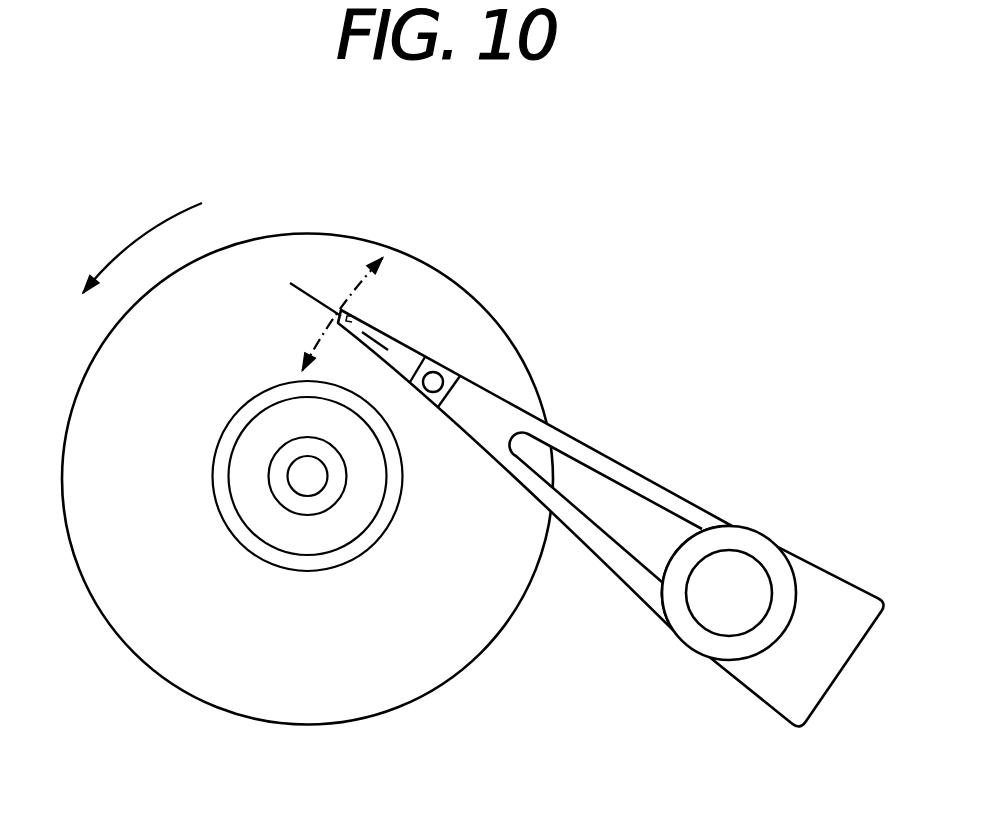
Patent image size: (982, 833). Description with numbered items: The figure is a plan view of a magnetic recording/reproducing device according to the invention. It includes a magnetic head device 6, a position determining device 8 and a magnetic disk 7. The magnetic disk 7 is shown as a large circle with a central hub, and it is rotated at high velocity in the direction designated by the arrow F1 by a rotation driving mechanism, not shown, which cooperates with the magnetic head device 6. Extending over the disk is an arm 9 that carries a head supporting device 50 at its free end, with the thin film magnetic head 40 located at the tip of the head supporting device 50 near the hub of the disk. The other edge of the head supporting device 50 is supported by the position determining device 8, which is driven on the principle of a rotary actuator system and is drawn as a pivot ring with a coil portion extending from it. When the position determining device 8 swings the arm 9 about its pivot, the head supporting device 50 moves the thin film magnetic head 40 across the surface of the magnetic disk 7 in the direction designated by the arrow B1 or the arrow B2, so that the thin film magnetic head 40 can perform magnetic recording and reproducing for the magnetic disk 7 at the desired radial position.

The magnetic head device 6 is at (572, 415).
The magnetic disk 7 is at (201, 688).
The position determining device 8 is at (762, 682).
The arm 9 is at (664, 495).
The thin film magnetic head 40 is at (343, 309).
The head supporting device 50 is at (404, 343).
The arrow F1 is at (137, 238).
The arrow B1 is at (358, 285).
The arrow B2 is at (322, 335).